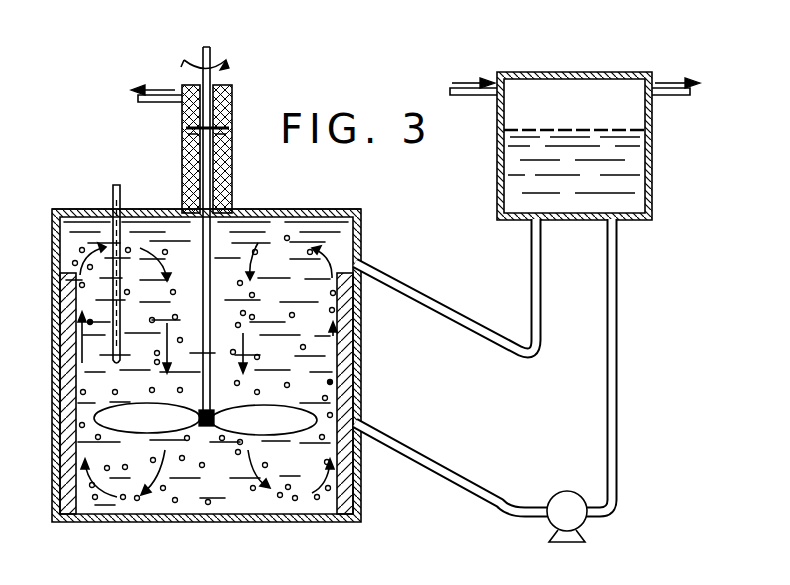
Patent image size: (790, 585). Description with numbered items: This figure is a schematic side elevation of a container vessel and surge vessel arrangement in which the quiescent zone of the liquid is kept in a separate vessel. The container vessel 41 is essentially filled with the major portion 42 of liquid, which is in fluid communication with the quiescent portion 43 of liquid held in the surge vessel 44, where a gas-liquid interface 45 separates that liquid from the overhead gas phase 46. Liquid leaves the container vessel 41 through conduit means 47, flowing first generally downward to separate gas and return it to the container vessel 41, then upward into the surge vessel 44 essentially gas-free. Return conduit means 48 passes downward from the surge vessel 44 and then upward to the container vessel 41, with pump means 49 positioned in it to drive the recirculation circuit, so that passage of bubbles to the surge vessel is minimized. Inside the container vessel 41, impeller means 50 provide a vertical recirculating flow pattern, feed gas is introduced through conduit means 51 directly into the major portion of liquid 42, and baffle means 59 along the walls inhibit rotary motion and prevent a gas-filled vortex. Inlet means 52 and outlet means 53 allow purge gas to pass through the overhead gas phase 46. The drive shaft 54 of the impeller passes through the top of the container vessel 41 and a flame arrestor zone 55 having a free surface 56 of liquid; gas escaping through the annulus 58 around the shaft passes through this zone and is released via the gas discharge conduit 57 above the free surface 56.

The container vessel 41 is at (361, 397).
The major portion of liquid 42 is at (315, 320).
The quiescent portion of liquid 43 is at (633, 170).
The surge vessel 44 is at (653, 192).
The gas-liquid interface 45 is at (640, 130).
The overhead gas phase 46 is at (627, 112).
The conduit means 47 is at (430, 293).
The return conduit means 48 is at (420, 453).
The pump means 49 is at (551, 494).
The impeller means 50 is at (136, 409).
The conduit means 51 is at (112, 192).
The inlet means 52 is at (462, 92).
The outlet means 53 is at (665, 92).
The drive shaft 54 is at (198, 53).
The flame arrestor zone 55 is at (233, 182).
The free surface 56 is at (218, 128).
The gas discharge conduit 57 is at (172, 105).
The annulus 58 is at (181, 212).
The baffle means 59 is at (67, 438).